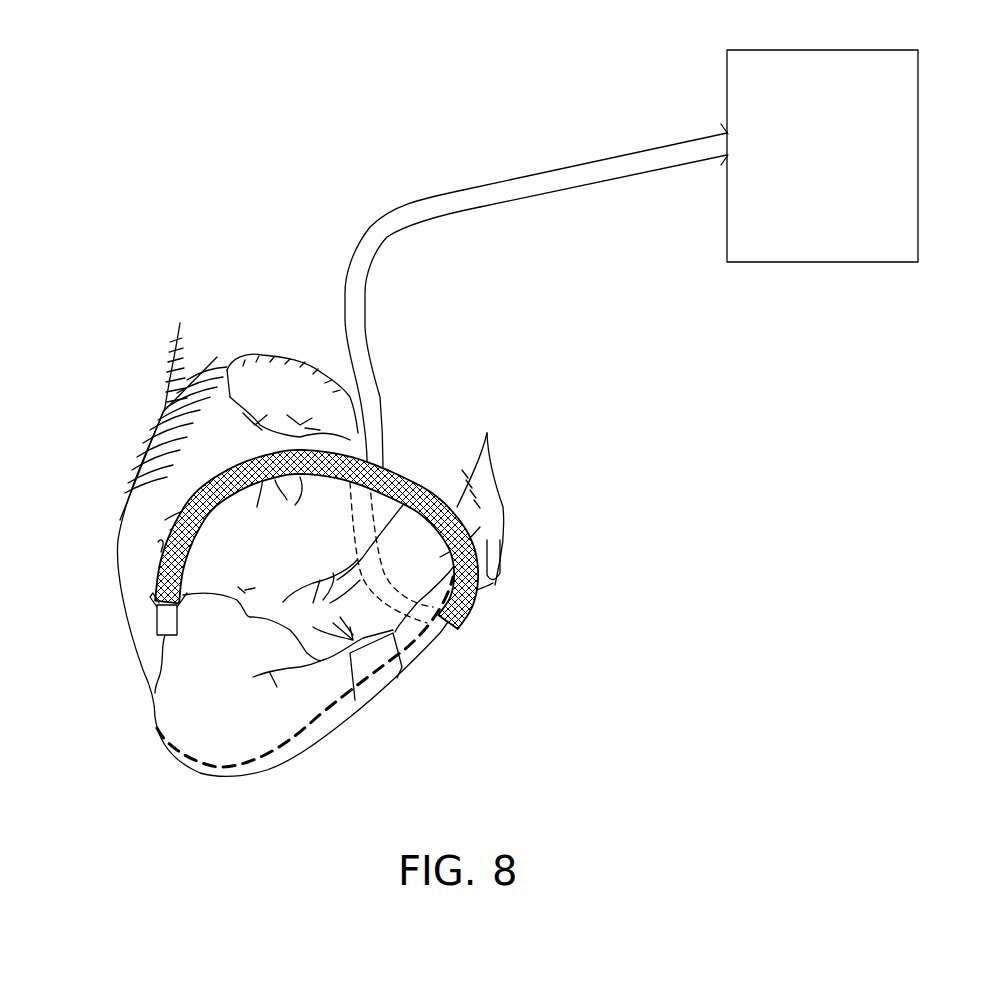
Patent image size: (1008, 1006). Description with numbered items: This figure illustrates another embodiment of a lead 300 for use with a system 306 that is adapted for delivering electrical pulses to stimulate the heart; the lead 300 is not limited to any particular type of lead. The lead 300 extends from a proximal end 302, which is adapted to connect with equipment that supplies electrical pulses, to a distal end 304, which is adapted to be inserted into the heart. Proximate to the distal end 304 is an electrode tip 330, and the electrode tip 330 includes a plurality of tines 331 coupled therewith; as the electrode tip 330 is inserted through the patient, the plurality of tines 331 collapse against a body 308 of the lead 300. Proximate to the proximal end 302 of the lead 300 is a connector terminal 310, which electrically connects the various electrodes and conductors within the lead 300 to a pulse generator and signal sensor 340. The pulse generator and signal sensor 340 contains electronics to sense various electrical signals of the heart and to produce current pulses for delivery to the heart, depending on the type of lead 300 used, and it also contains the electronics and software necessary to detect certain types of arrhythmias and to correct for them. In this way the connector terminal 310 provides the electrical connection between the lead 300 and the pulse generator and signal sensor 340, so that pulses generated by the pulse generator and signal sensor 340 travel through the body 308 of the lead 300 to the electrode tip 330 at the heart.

The lead 300 is at (468, 206).
The proximal end 302 is at (700, 100).
The distal end 304 is at (127, 695).
The system 306 is at (285, 82).
The body 308 is at (368, 260).
The connector terminal 310 is at (707, 180).
The electrode tip 330 is at (155, 617).
The tines 331 is at (148, 595).
The pulse generator and signal sensor 340 is at (852, 50).